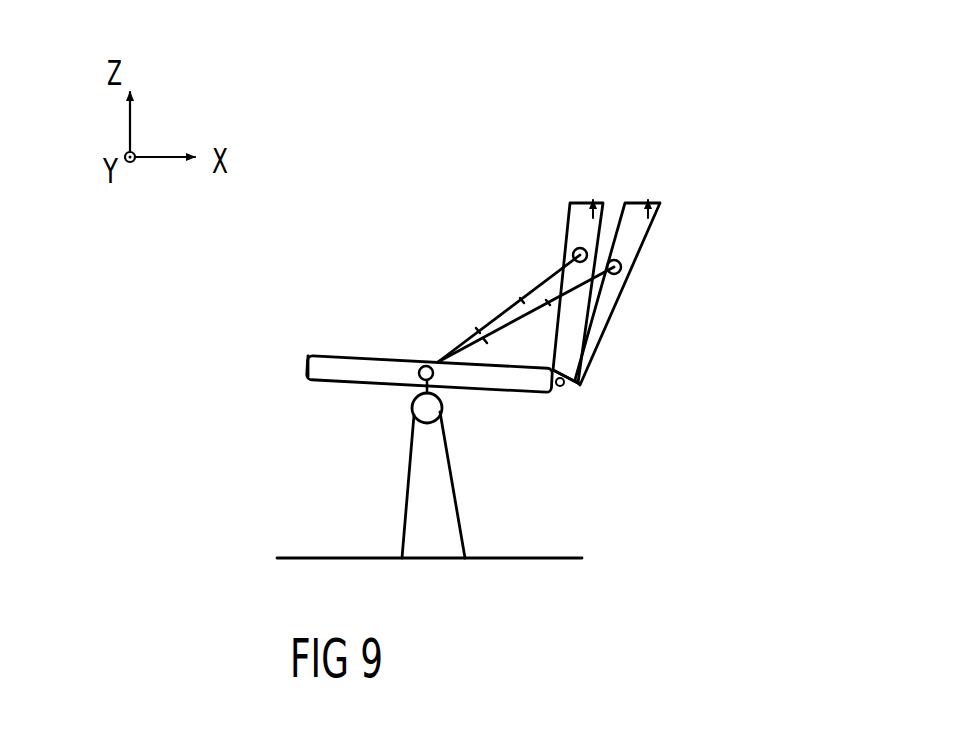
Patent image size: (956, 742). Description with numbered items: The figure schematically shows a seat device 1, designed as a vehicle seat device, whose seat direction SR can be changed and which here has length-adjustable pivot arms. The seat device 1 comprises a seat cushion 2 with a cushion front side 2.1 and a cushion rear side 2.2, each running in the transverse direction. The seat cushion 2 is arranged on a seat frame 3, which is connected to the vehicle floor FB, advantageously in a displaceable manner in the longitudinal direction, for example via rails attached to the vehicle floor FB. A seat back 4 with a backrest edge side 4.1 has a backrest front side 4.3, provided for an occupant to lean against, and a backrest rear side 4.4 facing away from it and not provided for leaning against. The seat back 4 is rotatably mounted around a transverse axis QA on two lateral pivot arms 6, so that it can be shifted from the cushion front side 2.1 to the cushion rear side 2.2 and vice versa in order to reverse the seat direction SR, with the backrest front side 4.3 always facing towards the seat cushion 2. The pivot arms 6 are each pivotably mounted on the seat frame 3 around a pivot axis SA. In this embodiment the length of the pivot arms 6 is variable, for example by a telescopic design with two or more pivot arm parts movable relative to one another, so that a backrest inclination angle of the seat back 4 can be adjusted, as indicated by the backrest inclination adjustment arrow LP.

The seat device 1 is at (686, 142).
The seat cushion 2 is at (345, 354).
The cushion front side 2.1 is at (554, 395).
The cushion rear side 2.2 is at (307, 367).
The seat frame 3 is at (413, 497).
The seat back 4 is at (625, 239).
The backrest edge side 4.1 is at (566, 385).
The backrest front side 4.3 is at (613, 238).
The backrest rear side 4.4 is at (588, 225).
The pivot arms 6 is at (500, 330).
The pivot axis SA is at (418, 383).
The transverse axis QA is at (623, 267).
The seat direction SR is at (423, 308).
The backrest inclination adjustment arrow LP is at (646, 182).
The vehicle floor FB is at (557, 560).